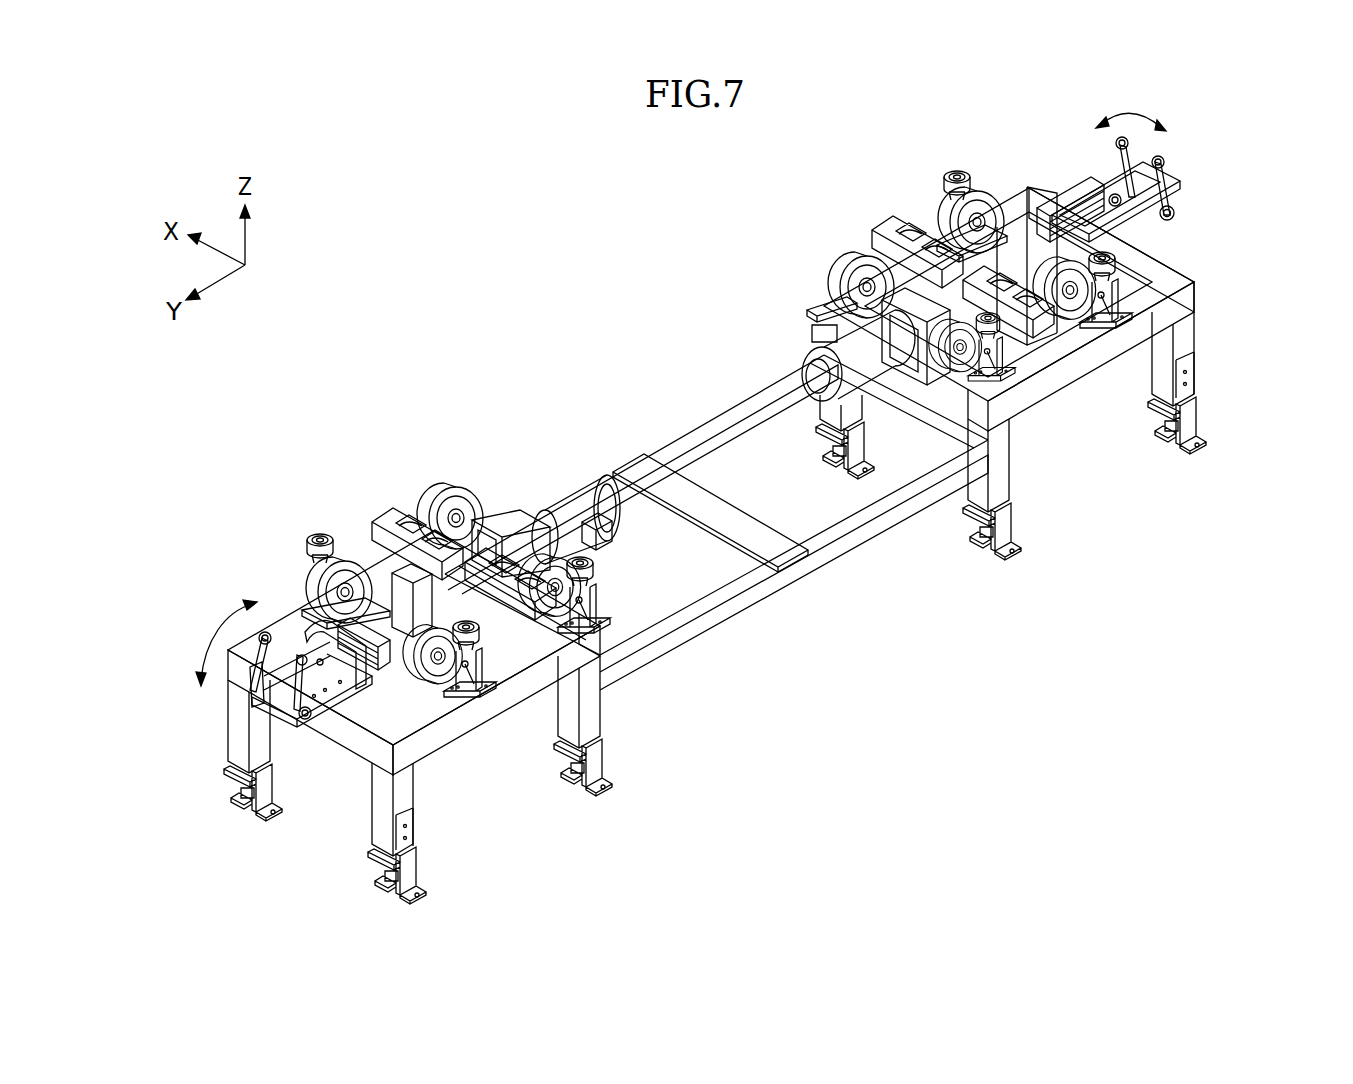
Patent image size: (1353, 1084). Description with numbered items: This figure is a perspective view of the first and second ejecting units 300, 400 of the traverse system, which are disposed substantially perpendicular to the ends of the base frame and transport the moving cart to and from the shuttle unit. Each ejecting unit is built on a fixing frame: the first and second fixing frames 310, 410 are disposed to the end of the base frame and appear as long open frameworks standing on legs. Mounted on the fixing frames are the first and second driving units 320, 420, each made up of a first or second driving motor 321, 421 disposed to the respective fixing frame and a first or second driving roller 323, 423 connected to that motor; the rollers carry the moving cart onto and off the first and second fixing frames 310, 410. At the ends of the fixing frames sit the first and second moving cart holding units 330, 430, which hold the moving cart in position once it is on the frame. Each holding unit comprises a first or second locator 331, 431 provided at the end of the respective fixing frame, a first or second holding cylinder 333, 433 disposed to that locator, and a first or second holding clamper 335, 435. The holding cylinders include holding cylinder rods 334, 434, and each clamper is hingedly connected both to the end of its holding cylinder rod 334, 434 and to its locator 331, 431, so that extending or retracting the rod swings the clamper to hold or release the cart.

The first ejecting unit 300 is at (697, 496).
The second ejecting unit 400 is at (642, 333).
The first fixing frame 310 is at (715, 545).
The second fixing frame 410 is at (773, 587).
The first driving unit 320 is at (678, 419).
The second driving unit 420 is at (543, 348).
The first driving motor 321 is at (711, 386).
The second driving motor 421 is at (573, 497).
The first driving roller 323 is at (653, 356).
The second driving roller 423 is at (447, 503).
The first moving cart holding unit 330 is at (697, 463).
The second moving cart holding unit 430 is at (300, 728).
The first locator 331 is at (779, 500).
The second locator 431 is at (337, 690).
The first holding cylinder 333 is at (637, 363).
The second holding cylinder 433 is at (300, 593).
The holding cylinder rod 334 is at (706, 434).
The holding cylinder rod 434 is at (347, 672).
The first holding clamper 335 is at (674, 431).
The second holding clamper 435 is at (268, 680).